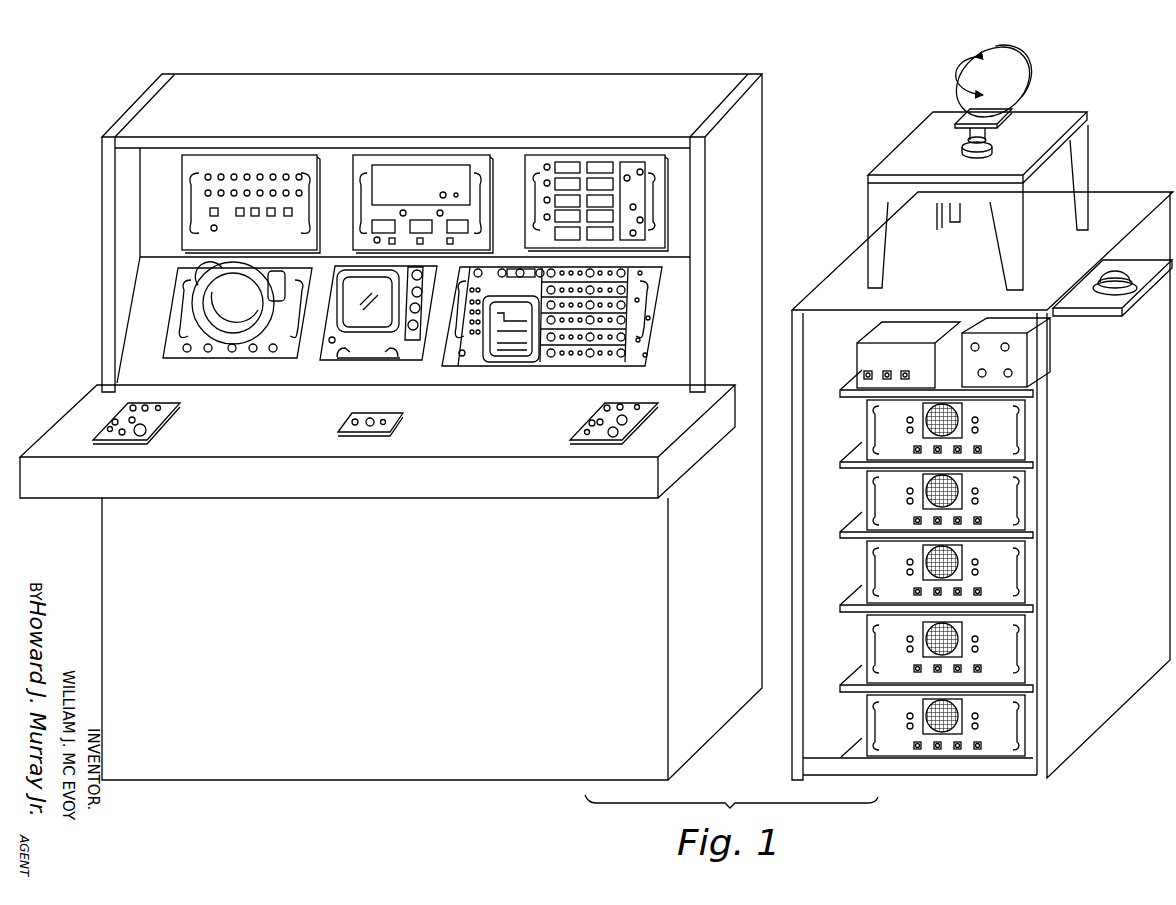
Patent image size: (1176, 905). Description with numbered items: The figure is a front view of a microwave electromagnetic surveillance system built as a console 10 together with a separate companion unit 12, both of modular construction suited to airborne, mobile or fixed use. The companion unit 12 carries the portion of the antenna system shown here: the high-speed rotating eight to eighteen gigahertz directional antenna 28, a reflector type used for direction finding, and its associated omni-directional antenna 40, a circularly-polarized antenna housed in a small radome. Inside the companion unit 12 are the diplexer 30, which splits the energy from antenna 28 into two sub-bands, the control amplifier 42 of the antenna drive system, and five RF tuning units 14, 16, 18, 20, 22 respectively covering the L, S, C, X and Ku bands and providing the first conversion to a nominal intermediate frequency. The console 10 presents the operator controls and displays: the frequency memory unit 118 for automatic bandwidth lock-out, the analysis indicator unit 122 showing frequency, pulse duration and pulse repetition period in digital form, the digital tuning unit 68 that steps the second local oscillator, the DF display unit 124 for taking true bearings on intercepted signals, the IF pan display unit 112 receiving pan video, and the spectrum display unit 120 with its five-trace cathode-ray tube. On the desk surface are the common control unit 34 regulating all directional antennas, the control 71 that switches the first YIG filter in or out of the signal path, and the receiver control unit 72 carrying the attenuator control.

The console 10 is at (103, 102).
The companion unit 12 is at (1107, 758).
The RF tuning unit 14 is at (1020, 425).
The RF tuning unit 16 is at (1020, 502).
The RF tuning unit 18 is at (1020, 568).
The RF tuning unit 20 is at (1020, 647).
The RF tuning unit 22 is at (945, 754).
The 8 to 18 gHz antenna 28 is at (992, 53).
The diplexer 30 is at (1021, 353).
The unit 34 is at (133, 446).
The omni-directional antenna 40 is at (1113, 262).
The amplifier 42 is at (871, 333).
The digital tuning unit 68 is at (618, 162).
The control 71 is at (378, 438).
The receiver control unit 72 is at (598, 446).
The IF pan display unit 112 is at (329, 358).
The frequency memory unit 118 is at (262, 162).
The spectrum display unit 120 is at (505, 371).
The analysis indicator unit 122 is at (422, 162).
The DF display unit 124 is at (171, 348).